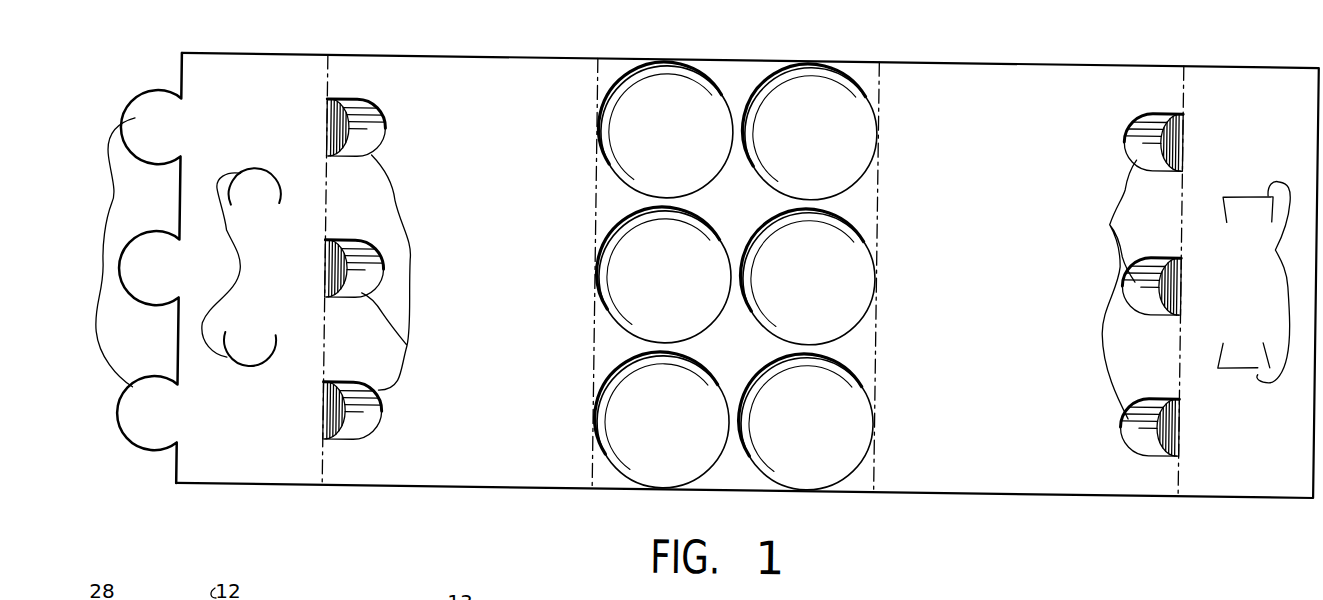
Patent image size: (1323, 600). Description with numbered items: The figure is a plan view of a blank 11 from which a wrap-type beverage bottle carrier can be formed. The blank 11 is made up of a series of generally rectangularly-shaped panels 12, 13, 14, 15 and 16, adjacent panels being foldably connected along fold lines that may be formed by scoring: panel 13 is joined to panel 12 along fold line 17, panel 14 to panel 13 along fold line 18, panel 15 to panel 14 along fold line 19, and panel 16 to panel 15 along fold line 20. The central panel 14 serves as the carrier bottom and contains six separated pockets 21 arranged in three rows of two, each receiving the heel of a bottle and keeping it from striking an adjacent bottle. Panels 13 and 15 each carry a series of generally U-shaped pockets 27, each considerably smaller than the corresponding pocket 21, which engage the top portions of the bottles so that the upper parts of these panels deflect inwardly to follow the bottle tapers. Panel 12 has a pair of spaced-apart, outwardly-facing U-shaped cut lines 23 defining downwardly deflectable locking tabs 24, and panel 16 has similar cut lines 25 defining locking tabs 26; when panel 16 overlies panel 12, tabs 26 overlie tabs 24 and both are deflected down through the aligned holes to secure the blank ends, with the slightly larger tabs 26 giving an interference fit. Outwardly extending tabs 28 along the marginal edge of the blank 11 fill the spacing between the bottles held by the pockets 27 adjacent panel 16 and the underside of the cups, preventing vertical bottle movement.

The blank 11 is at (403, 507).
The panel 12 is at (246, 288).
The panel 13 is at (410, 248).
The panel 14 is at (735, 252).
The panel 15 is at (950, 255).
The panel 16 is at (1242, 258).
The fold line 17 is at (335, 60).
The fold line 18 is at (597, 82).
The fold line 19 is at (880, 96).
The fold line 20 is at (1183, 62).
The pockets 21 is at (653, 145).
The U-shaped cut lines 23 is at (218, 264).
The locking tabs 24 is at (240, 211).
The U-shaped cut lines 25 is at (1281, 282).
The locking tabs 26 is at (1233, 215).
The U-shaped pockets 27 is at (753, 277).
The tabs 28 is at (108, 252).